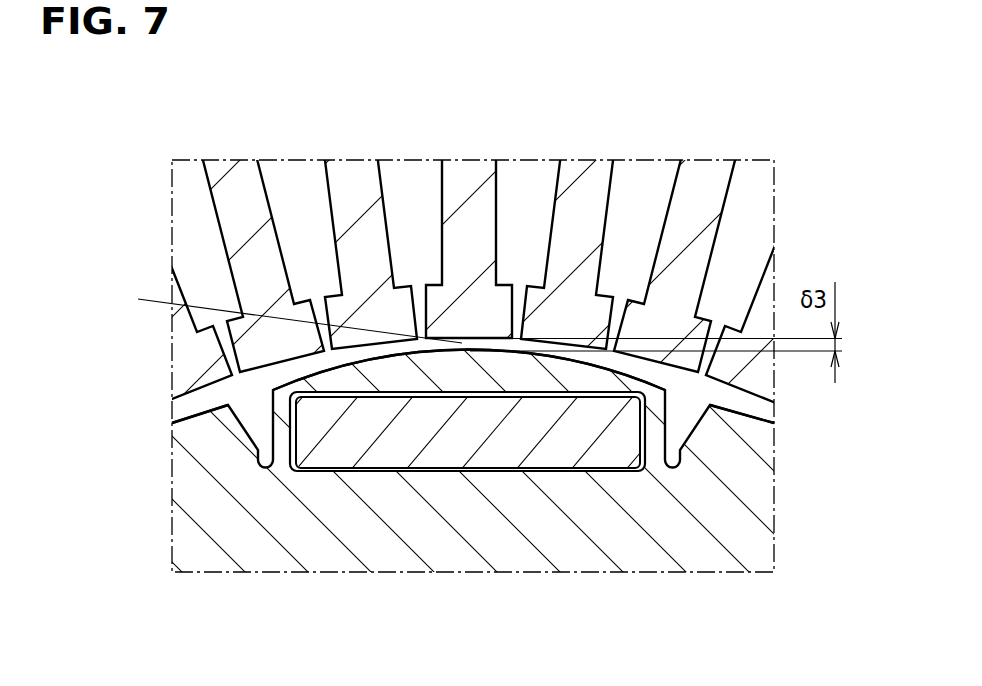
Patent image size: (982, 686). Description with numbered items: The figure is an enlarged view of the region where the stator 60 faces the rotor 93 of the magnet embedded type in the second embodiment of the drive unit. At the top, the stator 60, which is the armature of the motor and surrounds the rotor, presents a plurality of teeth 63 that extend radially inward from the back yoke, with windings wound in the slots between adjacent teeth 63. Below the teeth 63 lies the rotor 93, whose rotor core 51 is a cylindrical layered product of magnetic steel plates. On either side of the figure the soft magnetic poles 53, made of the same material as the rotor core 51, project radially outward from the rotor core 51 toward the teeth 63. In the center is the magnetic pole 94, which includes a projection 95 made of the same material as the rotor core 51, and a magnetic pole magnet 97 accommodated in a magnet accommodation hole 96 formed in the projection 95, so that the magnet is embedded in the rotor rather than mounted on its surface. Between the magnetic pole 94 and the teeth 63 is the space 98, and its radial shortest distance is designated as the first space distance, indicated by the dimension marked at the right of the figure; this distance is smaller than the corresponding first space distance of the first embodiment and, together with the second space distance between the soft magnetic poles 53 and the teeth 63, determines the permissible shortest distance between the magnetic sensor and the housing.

The stator 60 is at (491, 210).
The teeth 63 is at (243, 186).
The space 98 is at (284, 314).
The soft magnetic poles 53 is at (192, 435).
The rotor 93 is at (182, 524).
The rotor core 51 is at (579, 548).
The magnetic pole 94 is at (464, 518).
The projection 95 is at (406, 378).
The magnet accommodation hole 96 is at (642, 437).
The magnetic pole magnet 97 is at (473, 438).